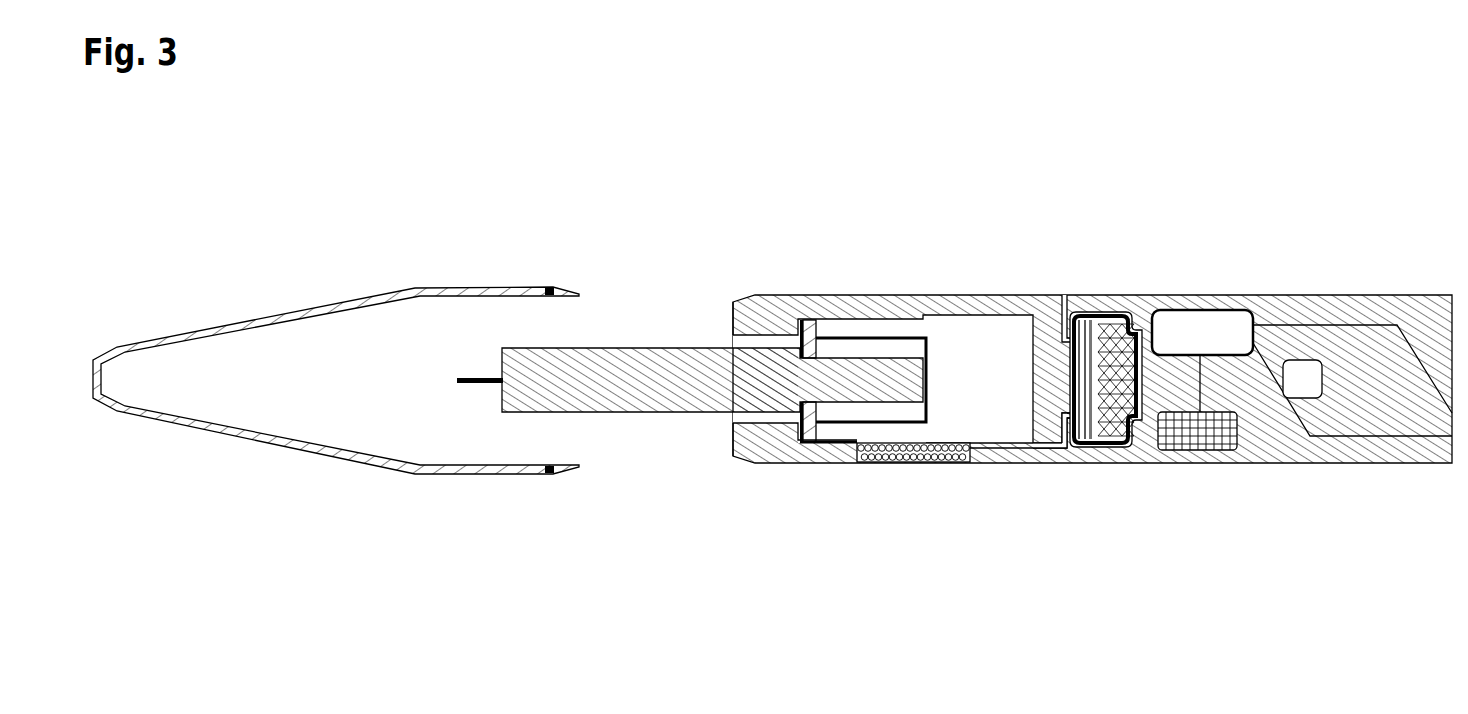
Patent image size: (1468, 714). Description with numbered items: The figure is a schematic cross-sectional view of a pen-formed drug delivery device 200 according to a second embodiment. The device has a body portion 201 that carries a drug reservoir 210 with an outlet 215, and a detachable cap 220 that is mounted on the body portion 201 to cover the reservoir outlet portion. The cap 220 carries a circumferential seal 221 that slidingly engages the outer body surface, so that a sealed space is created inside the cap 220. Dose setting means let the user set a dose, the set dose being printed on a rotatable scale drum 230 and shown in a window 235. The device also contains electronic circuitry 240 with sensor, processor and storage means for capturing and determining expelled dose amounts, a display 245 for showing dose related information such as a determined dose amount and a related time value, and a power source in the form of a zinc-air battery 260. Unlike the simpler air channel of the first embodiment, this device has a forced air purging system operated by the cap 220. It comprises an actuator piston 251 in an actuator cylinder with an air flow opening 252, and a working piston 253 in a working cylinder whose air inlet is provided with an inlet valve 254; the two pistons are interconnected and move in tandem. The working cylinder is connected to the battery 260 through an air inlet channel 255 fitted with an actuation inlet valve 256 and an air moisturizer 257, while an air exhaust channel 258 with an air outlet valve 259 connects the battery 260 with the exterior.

The drug delivery device 200 is at (196, 570).
The body portion 201 is at (903, 295).
The drug reservoir 210 is at (613, 413).
The outlet 215 is at (470, 378).
The detachable cap 220 is at (327, 306).
The circumferential seal 221 is at (550, 289).
The rotatable scale drum 230 is at (1333, 325).
The window 235 is at (1303, 398).
The electronic circuitry 240 is at (1220, 450).
The display 245 is at (1200, 310).
The actuator piston 251 is at (807, 320).
The air flow opening 252 is at (733, 340).
The working piston 253 is at (814, 426).
The inlet valve 254 is at (800, 413).
The air inlet channel 255 is at (1030, 449).
The actuation inlet valve 256 is at (808, 444).
The air moisturizer 257 is at (927, 452).
The air exhaust channel 258 is at (1060, 327).
The air outlet valve 259 is at (1064, 296).
The zinc-air battery 260 is at (1120, 426).